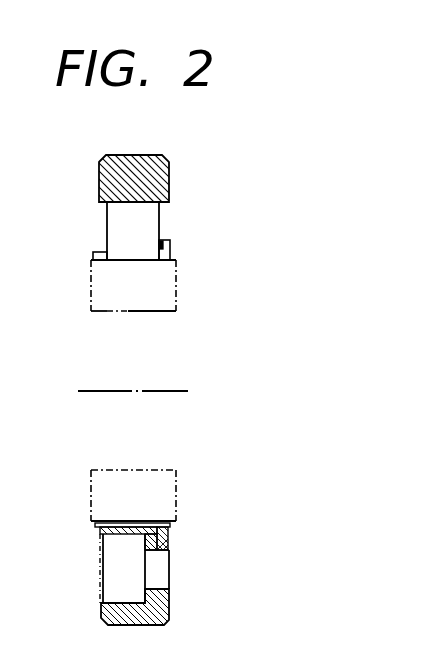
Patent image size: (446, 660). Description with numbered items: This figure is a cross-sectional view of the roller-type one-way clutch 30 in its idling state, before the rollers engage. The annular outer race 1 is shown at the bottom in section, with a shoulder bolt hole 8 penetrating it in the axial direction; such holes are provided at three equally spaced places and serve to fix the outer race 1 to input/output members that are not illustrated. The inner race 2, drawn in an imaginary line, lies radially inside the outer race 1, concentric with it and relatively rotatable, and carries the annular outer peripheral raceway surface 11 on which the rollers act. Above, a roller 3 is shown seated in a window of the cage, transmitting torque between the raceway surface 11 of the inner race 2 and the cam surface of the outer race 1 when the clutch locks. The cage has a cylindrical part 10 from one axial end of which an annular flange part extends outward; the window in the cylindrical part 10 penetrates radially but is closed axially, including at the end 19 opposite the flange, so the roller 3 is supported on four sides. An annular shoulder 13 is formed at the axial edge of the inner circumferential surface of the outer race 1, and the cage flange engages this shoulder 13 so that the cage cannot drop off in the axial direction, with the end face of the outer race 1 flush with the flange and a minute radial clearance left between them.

The roller-type one-way clutch 30 is at (188, 164).
The outer race 1 is at (117, 166).
The roller 3 is at (112, 218).
The end 19 is at (95, 256).
The inner race 2 is at (167, 292).
The outer peripheral raceway surface 11 is at (124, 261).
The cylindrical part 10 is at (125, 522).
The shoulder 13 is at (152, 540).
The shoulder bolt hole 8 is at (160, 588).